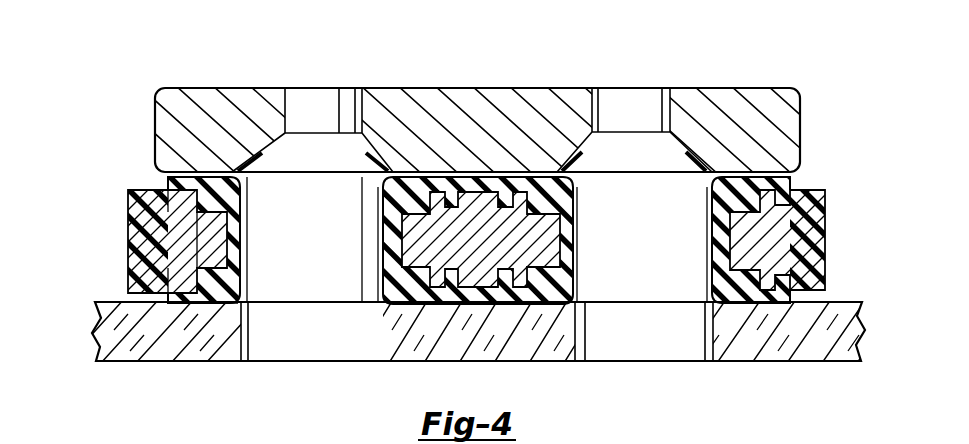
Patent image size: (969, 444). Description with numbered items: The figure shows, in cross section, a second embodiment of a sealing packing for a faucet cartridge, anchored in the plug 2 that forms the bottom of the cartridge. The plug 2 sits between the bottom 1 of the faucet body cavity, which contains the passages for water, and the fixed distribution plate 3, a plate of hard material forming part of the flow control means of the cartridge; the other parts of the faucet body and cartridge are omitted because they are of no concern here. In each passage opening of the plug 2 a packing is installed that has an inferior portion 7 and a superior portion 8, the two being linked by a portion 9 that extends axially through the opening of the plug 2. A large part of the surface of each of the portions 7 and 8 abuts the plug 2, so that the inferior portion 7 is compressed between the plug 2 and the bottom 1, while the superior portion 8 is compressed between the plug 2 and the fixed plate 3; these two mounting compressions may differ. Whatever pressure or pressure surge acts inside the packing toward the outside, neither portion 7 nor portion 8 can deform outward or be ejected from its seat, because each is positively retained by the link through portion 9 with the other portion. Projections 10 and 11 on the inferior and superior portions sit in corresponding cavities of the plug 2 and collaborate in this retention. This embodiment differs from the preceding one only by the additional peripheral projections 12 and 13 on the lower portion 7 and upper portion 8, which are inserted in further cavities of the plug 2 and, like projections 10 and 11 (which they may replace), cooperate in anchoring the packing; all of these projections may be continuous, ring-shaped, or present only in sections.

The bottom of faucet body cavity 1 is at (800, 340).
The plug 2 is at (805, 244).
The fixed distribution plate 3 is at (780, 128).
The inferior portion 7 is at (196, 304).
The superior portion 8 is at (207, 177).
The linking portion 9 is at (240, 234).
The projection 10 is at (178, 238).
The projection 11 is at (165, 205).
The peripheral projection 12 is at (180, 270).
The peripheral projection 13 is at (171, 199).